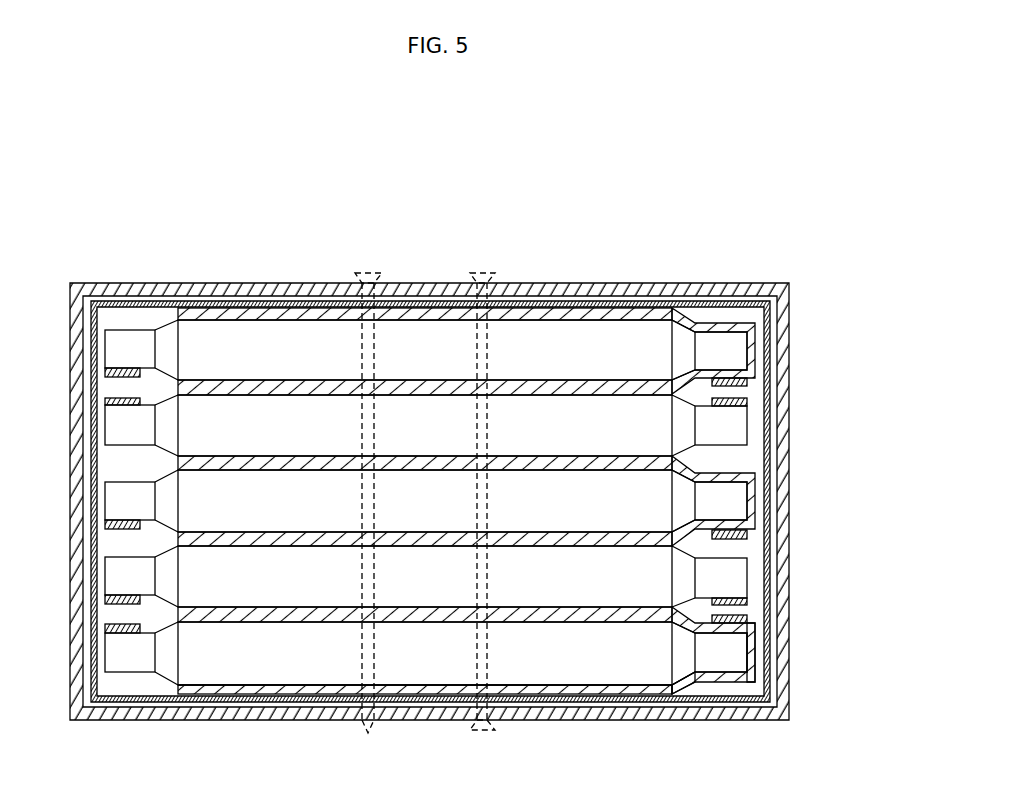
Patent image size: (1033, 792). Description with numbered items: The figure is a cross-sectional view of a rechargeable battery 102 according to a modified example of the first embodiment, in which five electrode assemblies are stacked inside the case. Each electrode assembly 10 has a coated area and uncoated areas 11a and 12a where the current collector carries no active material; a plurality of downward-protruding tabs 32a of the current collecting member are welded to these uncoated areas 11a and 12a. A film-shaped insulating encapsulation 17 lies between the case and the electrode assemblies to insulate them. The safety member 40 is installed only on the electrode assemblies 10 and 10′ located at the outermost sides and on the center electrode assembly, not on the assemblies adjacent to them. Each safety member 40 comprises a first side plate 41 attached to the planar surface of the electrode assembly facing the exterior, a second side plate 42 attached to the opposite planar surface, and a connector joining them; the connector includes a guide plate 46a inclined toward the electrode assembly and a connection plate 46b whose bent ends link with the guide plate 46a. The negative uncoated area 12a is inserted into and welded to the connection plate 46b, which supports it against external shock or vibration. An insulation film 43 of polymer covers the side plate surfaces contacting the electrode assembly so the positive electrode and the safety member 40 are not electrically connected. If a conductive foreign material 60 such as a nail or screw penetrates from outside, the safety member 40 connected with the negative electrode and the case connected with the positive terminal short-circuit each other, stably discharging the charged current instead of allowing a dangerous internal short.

The rechargeable battery 102 is at (400, 172).
The electrode assembly 10 is at (403, 658).
The electrode assembly 10′ is at (597, 340).
The uncoated area 11a is at (129, 342).
The uncoated area 12a is at (725, 342).
The insulating encapsulation 17 is at (236, 304).
The tab 32a is at (712, 401).
The safety member 40 is at (307, 306).
The first side plate 41 is at (262, 690).
The second side plate 42 is at (216, 615).
The insulation film 43 is at (289, 697).
The guide plate 46a is at (688, 692).
The connection plate 46b is at (755, 672).
The conductive foreign material 60 is at (372, 272).